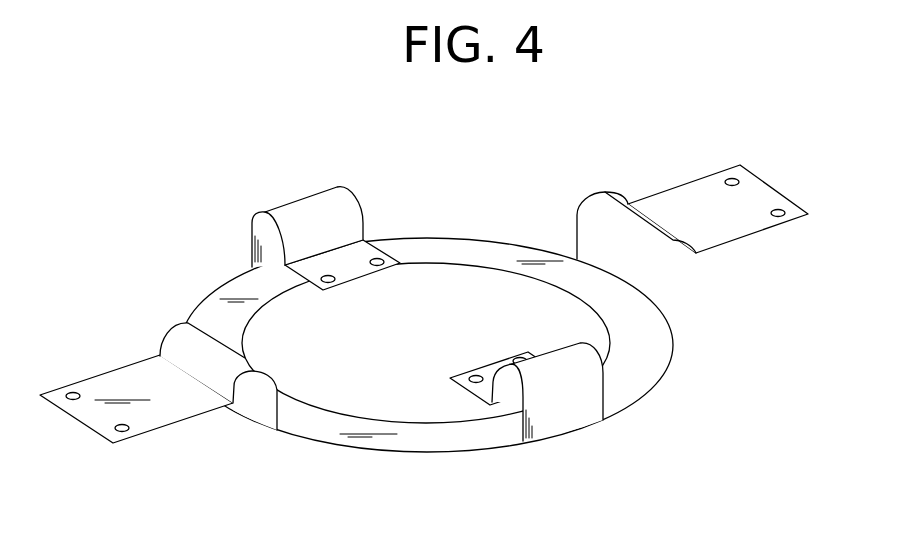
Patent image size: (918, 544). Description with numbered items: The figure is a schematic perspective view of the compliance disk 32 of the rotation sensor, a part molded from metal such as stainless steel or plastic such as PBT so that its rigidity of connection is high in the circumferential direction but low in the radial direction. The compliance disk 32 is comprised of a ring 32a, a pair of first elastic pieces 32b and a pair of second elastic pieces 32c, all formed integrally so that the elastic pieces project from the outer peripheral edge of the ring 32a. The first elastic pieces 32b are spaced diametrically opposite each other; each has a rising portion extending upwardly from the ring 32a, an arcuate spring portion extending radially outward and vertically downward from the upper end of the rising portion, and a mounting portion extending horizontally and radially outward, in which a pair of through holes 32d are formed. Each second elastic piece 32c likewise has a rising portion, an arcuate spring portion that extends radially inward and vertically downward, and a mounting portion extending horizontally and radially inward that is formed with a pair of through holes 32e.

The compliance disk 32 is at (424, 298).
The ring 32a is at (647, 351).
The first elastic pieces 32b is at (147, 376).
The second elastic pieces 32c is at (303, 213).
The through holes 32d is at (122, 428).
The through holes 32e is at (378, 258).